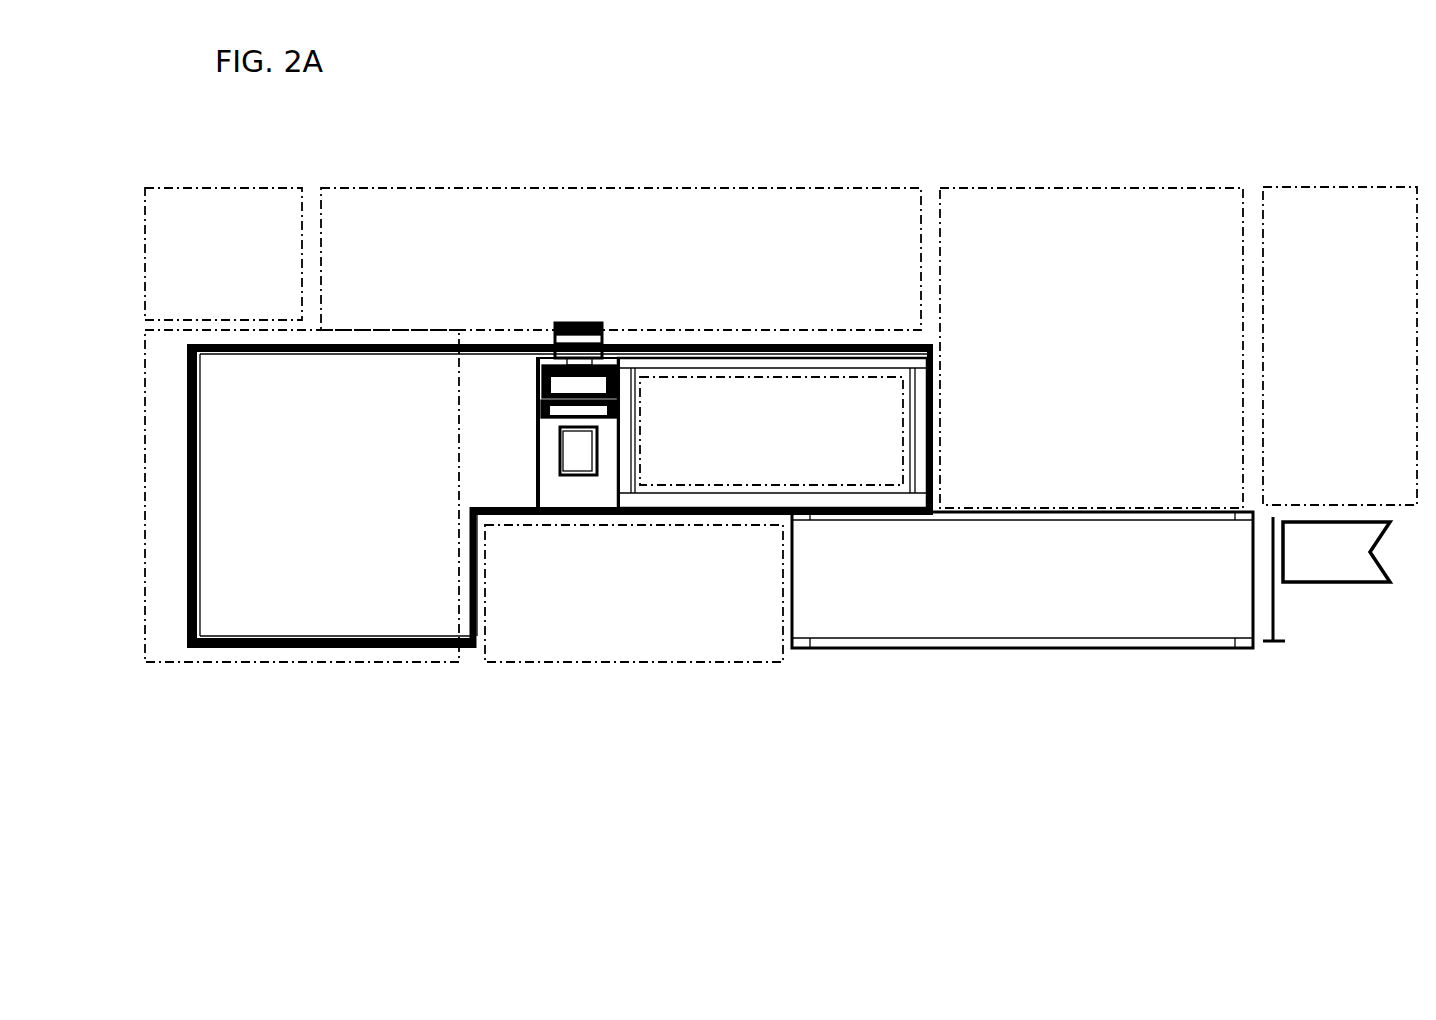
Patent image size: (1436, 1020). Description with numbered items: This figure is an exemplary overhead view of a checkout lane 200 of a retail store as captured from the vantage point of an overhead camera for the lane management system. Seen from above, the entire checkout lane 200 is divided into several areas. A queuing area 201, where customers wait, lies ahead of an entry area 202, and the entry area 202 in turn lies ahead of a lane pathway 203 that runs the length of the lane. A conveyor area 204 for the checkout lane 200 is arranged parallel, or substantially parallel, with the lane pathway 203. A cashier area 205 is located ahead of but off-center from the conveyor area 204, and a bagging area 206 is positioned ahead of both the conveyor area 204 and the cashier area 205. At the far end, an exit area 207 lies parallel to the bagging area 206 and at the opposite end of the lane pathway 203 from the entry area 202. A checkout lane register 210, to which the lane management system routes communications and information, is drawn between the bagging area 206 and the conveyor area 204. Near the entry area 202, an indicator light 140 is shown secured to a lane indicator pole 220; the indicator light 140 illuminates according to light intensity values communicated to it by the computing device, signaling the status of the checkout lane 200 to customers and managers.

The checkout lane 200 is at (253, 121).
The queuing area 201 is at (1340, 346).
The entry area 202 is at (1091, 348).
The lane pathway 203 is at (621, 259).
The conveyor area 204 is at (772, 433).
The cashier area 205 is at (634, 593).
The bagging area 206 is at (539, 496).
The exit area 207 is at (223, 254).
The checkout lane register 210 is at (526, 393).
The indicator light 140 is at (1336, 552).
The lane indicator pole 220 is at (1305, 598).